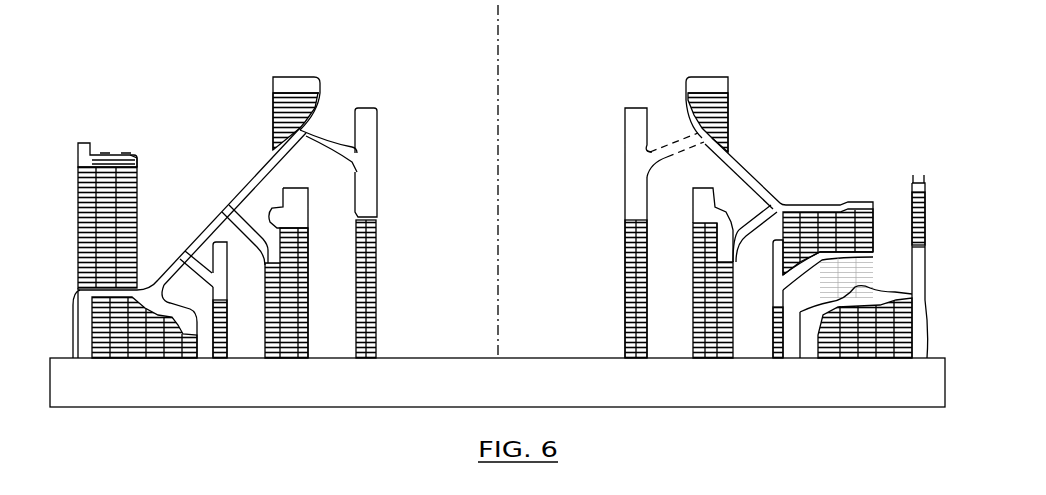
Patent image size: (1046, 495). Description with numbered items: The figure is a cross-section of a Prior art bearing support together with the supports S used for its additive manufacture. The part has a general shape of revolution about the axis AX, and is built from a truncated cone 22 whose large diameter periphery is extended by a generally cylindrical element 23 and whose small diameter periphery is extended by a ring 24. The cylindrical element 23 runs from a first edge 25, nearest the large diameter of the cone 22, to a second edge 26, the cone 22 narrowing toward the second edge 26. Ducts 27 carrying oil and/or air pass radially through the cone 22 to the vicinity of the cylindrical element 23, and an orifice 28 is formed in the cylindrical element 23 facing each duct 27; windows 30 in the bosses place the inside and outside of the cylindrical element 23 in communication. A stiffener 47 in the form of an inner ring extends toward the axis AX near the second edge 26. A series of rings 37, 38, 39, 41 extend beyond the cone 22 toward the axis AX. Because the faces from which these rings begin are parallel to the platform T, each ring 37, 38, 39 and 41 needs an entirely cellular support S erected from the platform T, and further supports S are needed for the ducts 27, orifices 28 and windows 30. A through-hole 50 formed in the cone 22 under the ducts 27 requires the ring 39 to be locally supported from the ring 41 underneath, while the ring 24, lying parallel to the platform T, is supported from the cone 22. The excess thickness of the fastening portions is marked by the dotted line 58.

The cone 22 is at (248, 152).
The cylindrical element 23 is at (931, 216).
The ring 24 is at (703, 77).
The first edge 25 is at (497, 411).
The second edge 26 is at (85, 143).
The duct 27 is at (838, 195).
The orifice 28 is at (930, 220).
The central window 30 is at (112, 157).
The first ring 37 is at (395, 160).
The ring 38 is at (335, 233).
The ring 39 is at (198, 247).
The ring 41 is at (177, 325).
The stiffener 47 is at (112, 152).
The through-hole 50 is at (875, 270).
The excess thickness marking 58 is at (140, 150).
The supports S is at (300, 345).
The axis AX is at (500, 121).
The platform T is at (82, 388).